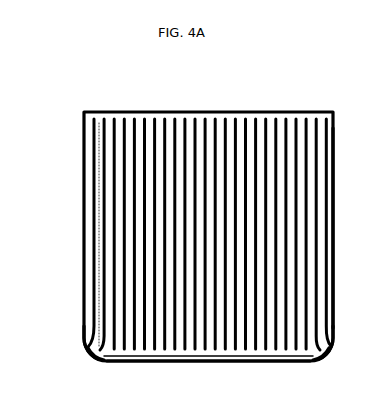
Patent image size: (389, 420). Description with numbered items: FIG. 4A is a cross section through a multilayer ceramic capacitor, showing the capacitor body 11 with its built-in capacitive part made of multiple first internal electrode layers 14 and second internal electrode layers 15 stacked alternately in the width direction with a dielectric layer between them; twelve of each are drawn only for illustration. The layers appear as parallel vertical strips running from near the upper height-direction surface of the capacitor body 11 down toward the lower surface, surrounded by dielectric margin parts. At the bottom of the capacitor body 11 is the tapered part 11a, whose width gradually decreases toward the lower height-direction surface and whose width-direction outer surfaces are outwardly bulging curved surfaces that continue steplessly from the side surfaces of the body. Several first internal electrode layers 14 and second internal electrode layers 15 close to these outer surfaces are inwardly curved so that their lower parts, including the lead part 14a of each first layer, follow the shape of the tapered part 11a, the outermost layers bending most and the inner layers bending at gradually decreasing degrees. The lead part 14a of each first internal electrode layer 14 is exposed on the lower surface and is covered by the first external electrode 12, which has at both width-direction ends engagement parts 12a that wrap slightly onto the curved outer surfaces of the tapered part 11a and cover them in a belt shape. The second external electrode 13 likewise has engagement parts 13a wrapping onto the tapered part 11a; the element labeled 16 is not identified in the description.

The capacitor body 11 is at (76, 190).
The tapered part 11a is at (78, 327).
The first external electrode 12 is at (196, 355).
The engagement parts 12a is at (89, 350).
The second external electrode 13 is at (325, 247).
The engagement parts 13a is at (322, 334).
The first internal electrode layers 14 is at (318, 103).
The lead part 14a is at (83, 340).
The second internal electrode layers 15 is at (186, 103).
The bottom edge 16 is at (228, 353).